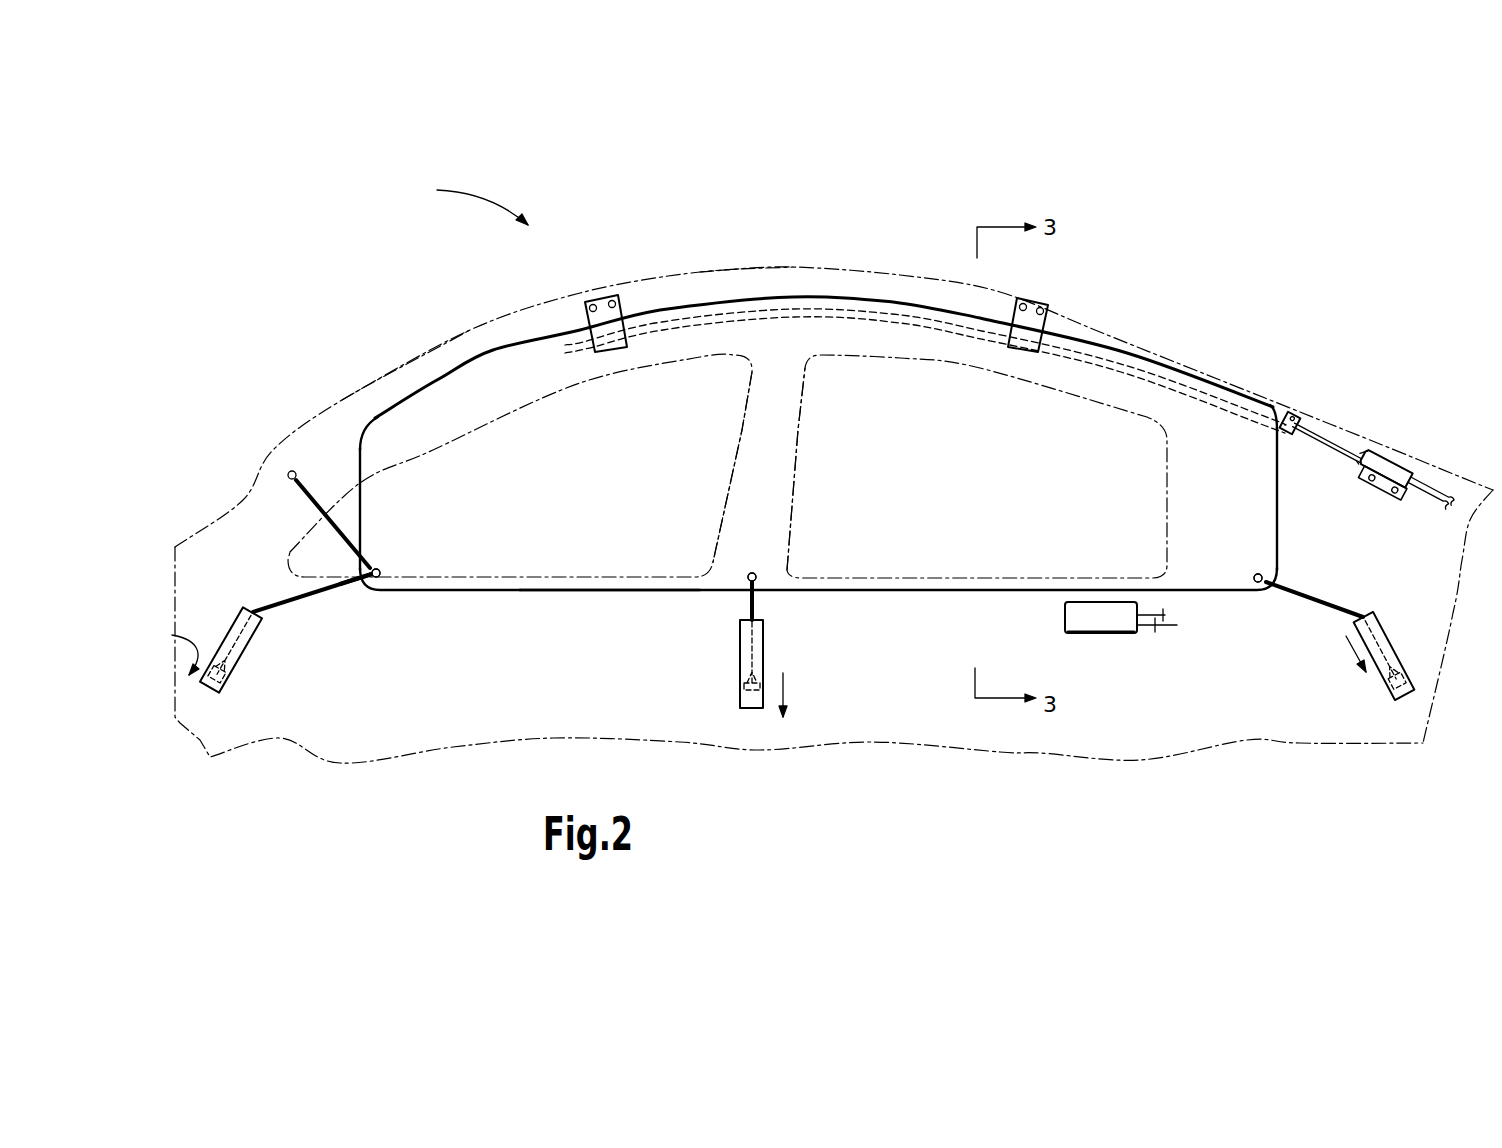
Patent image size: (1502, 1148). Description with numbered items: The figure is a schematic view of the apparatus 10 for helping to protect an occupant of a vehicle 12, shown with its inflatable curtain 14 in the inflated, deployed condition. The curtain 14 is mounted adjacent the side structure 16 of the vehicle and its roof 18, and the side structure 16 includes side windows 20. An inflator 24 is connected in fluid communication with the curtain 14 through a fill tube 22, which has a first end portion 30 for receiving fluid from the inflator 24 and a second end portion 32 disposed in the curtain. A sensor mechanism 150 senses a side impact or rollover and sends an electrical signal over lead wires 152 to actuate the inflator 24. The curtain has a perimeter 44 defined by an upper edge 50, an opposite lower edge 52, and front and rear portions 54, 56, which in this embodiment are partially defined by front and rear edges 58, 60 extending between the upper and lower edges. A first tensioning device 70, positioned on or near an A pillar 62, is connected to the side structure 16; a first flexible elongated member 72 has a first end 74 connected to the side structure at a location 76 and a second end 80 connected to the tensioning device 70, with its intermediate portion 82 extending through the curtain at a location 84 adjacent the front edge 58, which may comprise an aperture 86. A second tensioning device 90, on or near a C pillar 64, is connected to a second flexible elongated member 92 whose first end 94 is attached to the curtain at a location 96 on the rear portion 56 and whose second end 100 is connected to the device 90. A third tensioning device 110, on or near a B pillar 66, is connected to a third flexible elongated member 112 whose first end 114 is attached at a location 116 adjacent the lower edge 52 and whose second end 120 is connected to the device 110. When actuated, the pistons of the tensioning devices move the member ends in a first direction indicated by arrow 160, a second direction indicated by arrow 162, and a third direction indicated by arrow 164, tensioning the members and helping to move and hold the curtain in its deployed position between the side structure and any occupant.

The apparatus 10 is at (465, 200).
The vehicle 12 is at (489, 338).
The inflatable curtain 14 is at (557, 513).
The side structure 16 is at (680, 700).
The roof 18 is at (787, 265).
The side windows 20 is at (500, 537).
The fill tube 22 is at (1312, 430).
The inflator 24 is at (1392, 468).
The first end portion 30 is at (1345, 437).
The second end portion 32 is at (662, 323).
The perimeter 44 is at (445, 583).
The upper edge 50 is at (852, 300).
The lower edge 52 is at (602, 592).
The front portion 54 is at (397, 443).
The rear portion 56 is at (1227, 463).
The front edge 58 is at (360, 482).
The rear edge 60 is at (1278, 490).
The A pillar 62 is at (427, 364).
The C pillar 64 is at (1367, 560).
The B pillar 66 is at (782, 447).
The first tensioning device 70 is at (233, 663).
The first flexible elongated member 72 is at (313, 597).
The first end 74 is at (288, 483).
The location 76 is at (292, 470).
The second end 80 is at (225, 655).
The intermediate portion 82 is at (363, 582).
The location 84 is at (378, 568).
The aperture 86 is at (380, 572).
The second tensioning device 90 is at (1400, 658).
The second flexible elongated member 92 is at (1288, 593).
The first end 94 is at (1263, 575).
The location 96 is at (1253, 577).
The second end 100 is at (1400, 677).
The third tensioning device 110 is at (760, 650).
The third flexible elongated member 112 is at (750, 602).
The first end 114 is at (757, 577).
The location 116 is at (748, 575).
The second end 120 is at (750, 675).
The sensor mechanism 150 is at (1092, 617).
The lead wires 152 is at (1440, 487).
The arrow 160 is at (163, 650).
The arrow 162 is at (1348, 638).
The arrow 164 is at (785, 693).